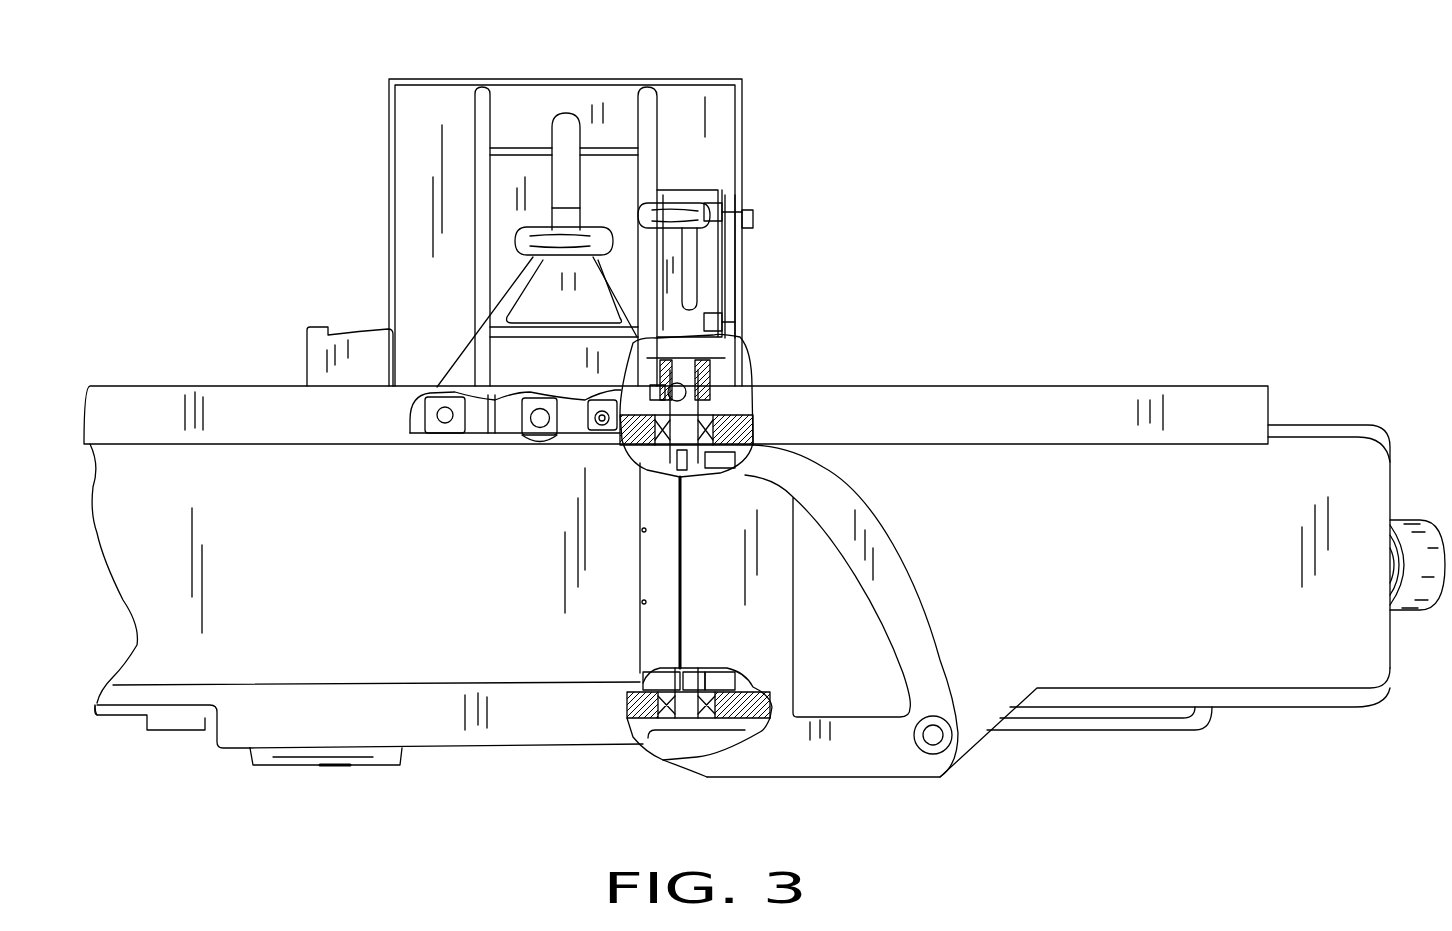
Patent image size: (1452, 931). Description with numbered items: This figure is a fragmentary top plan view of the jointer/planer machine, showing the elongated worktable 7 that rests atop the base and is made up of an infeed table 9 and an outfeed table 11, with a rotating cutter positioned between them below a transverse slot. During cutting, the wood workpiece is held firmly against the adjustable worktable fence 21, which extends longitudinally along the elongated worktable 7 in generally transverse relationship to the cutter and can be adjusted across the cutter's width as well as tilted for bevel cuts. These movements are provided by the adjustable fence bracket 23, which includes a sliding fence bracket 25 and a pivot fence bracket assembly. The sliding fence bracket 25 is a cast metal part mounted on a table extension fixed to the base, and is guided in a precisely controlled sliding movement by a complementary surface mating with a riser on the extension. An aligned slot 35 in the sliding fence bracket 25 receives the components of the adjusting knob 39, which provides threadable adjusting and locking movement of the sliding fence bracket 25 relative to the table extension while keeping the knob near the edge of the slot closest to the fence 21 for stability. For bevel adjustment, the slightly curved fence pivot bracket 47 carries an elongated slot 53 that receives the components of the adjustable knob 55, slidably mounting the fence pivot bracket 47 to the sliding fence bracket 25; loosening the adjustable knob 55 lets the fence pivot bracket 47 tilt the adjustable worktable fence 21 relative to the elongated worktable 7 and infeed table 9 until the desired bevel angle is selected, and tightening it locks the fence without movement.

The elongated worktable 7 is at (1320, 420).
The infeed table 9 is at (1338, 652).
The outfeed table 11 is at (182, 650).
The adjustable worktable fence 21 is at (1022, 383).
The adjustable fence bracket 23 is at (752, 273).
The sliding fence bracket 25 is at (422, 133).
The slot 35 is at (565, 130).
The adjusting knob 39 is at (593, 237).
The fence pivot bracket 47 is at (707, 296).
The elongated slot 53 is at (699, 258).
The adjustable knob 55 is at (680, 212).